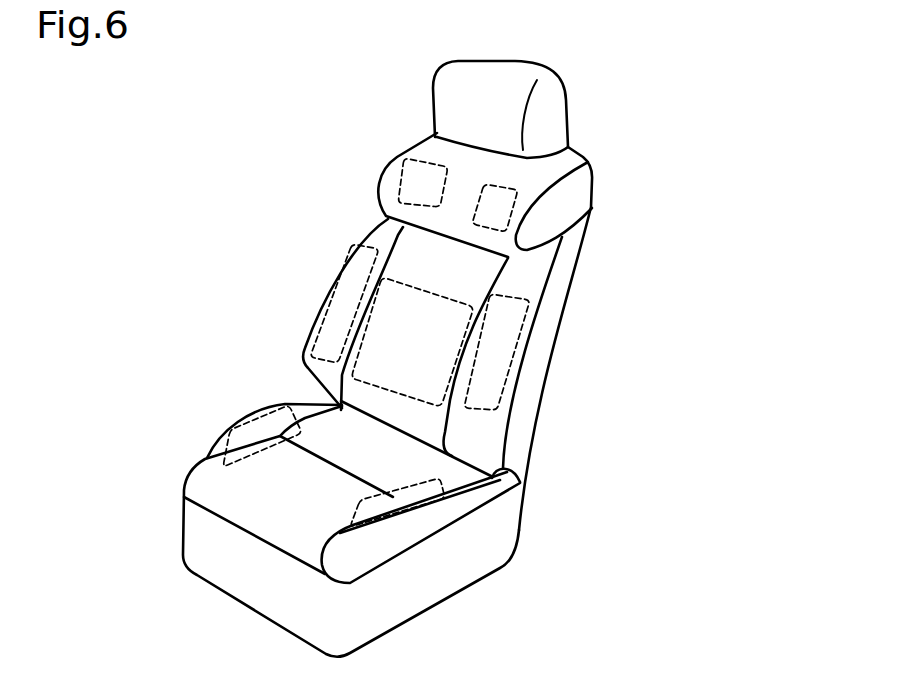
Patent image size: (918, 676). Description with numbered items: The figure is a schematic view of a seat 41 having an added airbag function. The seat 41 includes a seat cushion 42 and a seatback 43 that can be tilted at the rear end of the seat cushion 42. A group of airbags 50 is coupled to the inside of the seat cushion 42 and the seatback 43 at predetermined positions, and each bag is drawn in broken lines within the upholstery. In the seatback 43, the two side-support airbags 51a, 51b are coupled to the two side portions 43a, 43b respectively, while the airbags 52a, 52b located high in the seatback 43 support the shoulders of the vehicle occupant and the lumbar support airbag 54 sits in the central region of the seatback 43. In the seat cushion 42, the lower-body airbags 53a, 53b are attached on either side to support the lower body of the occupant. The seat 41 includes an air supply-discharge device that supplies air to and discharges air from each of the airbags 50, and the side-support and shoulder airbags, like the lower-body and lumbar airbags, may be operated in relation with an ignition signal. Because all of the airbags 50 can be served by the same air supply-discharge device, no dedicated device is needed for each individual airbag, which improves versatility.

The seat 41 is at (568, 86).
The seat cushion 42 is at (519, 541).
The seatback 43 is at (438, 331).
The side portion 43a is at (331, 293).
The side portion 43b is at (493, 360).
The airbags 50 is at (430, 377).
The side-support airbag 51a is at (370, 250).
The side-support airbag 51b is at (493, 297).
The airbag 52a is at (408, 162).
The airbag 52b is at (500, 186).
The lower-body airbag 53a is at (233, 430).
The lower-body airbag 53b is at (440, 495).
The lumbar support airbag 54 is at (350, 378).